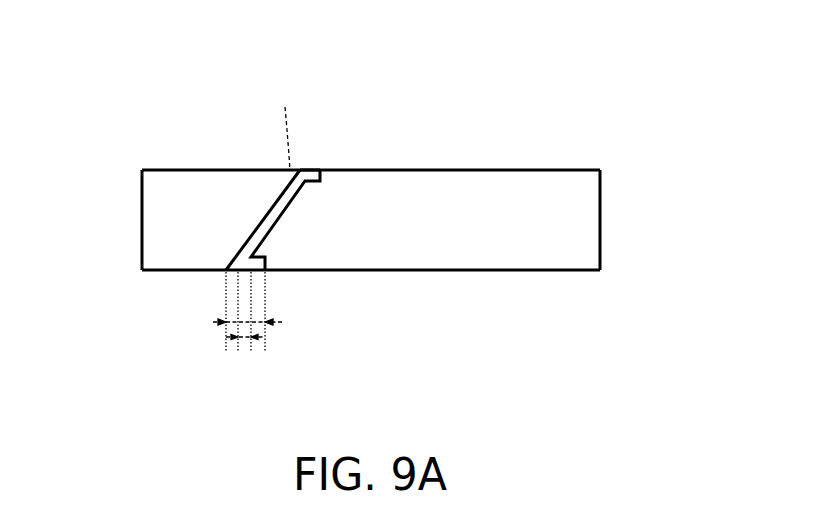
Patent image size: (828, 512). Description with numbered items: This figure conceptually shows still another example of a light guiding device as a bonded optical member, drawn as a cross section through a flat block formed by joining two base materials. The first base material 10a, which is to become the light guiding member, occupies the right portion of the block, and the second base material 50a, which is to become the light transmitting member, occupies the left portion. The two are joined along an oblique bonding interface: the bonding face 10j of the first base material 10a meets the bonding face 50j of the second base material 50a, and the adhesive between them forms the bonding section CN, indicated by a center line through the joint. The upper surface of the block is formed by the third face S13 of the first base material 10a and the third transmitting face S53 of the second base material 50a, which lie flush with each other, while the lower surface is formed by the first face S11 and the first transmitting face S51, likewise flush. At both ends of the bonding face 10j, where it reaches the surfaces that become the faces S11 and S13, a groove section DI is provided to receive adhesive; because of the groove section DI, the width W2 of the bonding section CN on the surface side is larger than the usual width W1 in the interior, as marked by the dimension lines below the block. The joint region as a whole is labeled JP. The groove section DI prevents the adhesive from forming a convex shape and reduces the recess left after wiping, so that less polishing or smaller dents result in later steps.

The first base material 10a is at (484, 232).
The bonding face 10j is at (292, 197).
The second base material 50a is at (168, 217).
The bonding face 50j is at (258, 252).
The joint part of joined body 20 JP is at (307, 164).
The first face S11 is at (378, 270).
The third face S13 is at (382, 171).
The first transmitting face S51 is at (167, 270).
The third transmitting face S53 is at (157, 170).
The bonding section CN is at (279, 125).
The groove section DI is at (314, 166).
The usual width W1 is at (270, 327).
The width on the surface side W2 is at (243, 342).